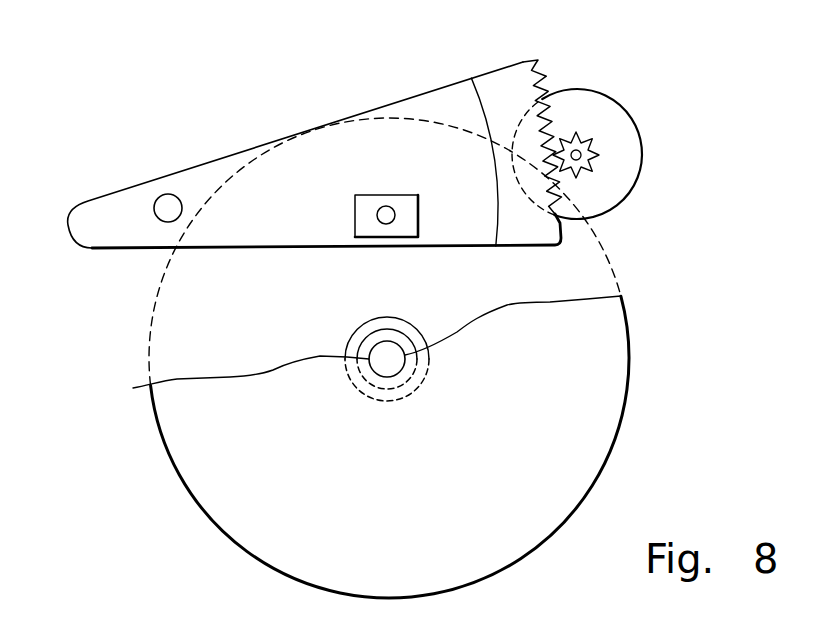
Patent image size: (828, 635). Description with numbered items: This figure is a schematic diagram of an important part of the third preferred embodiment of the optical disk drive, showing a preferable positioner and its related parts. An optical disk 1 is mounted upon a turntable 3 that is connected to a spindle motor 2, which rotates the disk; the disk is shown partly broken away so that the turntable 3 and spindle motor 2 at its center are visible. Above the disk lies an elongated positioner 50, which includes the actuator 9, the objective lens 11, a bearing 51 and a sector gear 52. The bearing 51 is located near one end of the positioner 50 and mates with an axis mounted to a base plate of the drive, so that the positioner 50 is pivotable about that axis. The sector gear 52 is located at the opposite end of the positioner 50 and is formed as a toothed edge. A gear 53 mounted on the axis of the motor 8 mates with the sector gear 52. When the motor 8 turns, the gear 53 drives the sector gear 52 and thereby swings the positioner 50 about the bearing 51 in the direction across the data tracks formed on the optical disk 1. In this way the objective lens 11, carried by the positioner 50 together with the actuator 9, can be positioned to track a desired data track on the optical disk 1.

The optical disk 1 is at (202, 460).
The spindle motor 2 is at (353, 331).
The turntable 3 is at (392, 368).
The motor 8 is at (586, 90).
The actuator 9 is at (392, 195).
The objective lens 11 is at (375, 203).
The positioner 50 is at (85, 228).
The bearing 51 is at (156, 206).
The sector gear 52 is at (530, 62).
The gear 53 is at (598, 148).